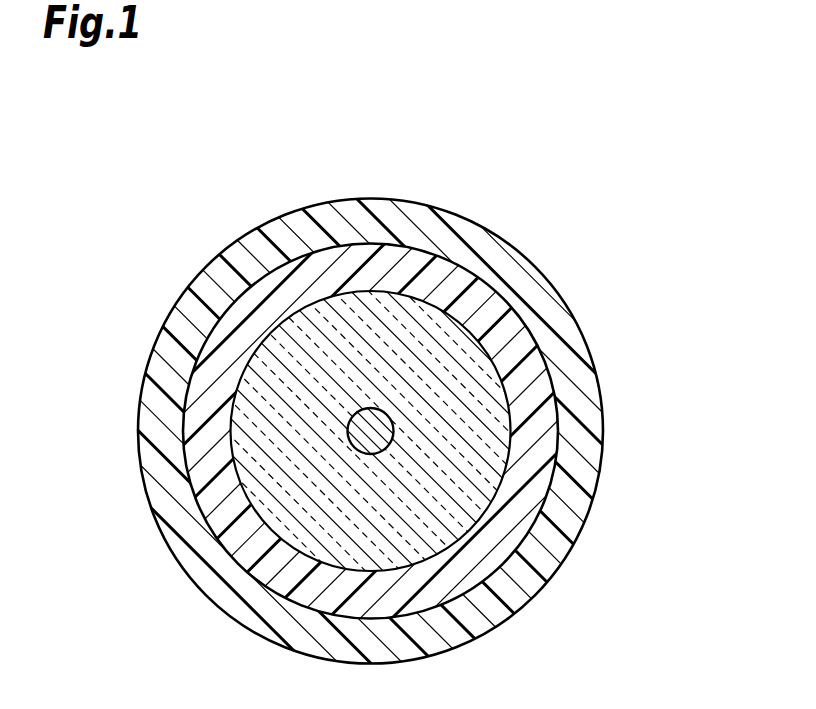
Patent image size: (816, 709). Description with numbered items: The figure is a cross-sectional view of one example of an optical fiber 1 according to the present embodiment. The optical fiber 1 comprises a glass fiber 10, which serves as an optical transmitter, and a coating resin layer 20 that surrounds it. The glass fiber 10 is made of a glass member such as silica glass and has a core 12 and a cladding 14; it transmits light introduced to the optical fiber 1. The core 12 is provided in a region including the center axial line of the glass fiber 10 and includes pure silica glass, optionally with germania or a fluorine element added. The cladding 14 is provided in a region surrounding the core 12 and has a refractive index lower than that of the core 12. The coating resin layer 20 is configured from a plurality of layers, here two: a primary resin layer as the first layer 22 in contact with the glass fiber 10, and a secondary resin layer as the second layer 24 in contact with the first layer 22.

The optical fiber 1 is at (448, 143).
The glass fiber 10 is at (422, 408).
The core 12 is at (388, 424).
The cladding 14 is at (487, 403).
The coating resin layer 20 is at (389, 406).
The first layer 22 is at (565, 441).
The second layer 24 is at (580, 510).